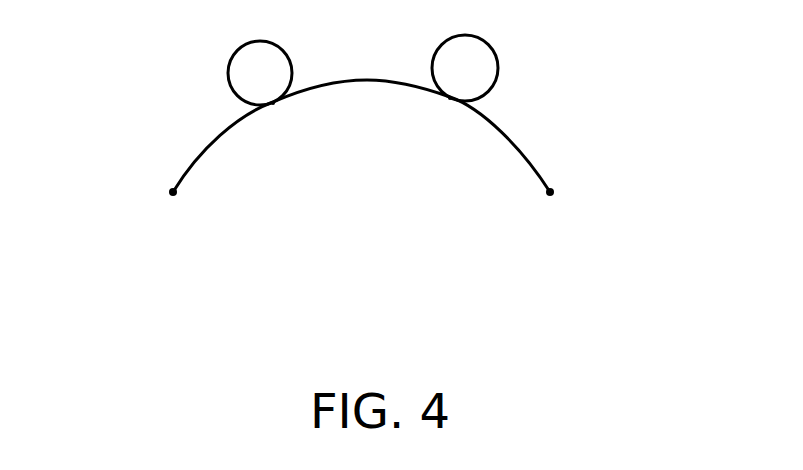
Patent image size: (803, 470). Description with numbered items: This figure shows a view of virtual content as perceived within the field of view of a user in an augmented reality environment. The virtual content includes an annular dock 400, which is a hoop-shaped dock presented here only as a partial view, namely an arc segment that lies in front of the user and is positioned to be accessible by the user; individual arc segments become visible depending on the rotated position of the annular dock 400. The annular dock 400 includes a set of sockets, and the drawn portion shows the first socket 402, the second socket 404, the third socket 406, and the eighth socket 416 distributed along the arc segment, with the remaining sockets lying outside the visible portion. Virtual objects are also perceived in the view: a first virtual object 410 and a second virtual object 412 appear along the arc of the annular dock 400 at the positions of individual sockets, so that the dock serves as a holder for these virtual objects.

The annular dock 400 is at (513, 140).
The first socket 402 is at (282, 103).
The second socket 404 is at (450, 99).
The third socket 406 is at (550, 192).
The first virtual object 410 is at (254, 85).
The second virtual object 412 is at (489, 45).
The eighth socket 416 is at (167, 198).